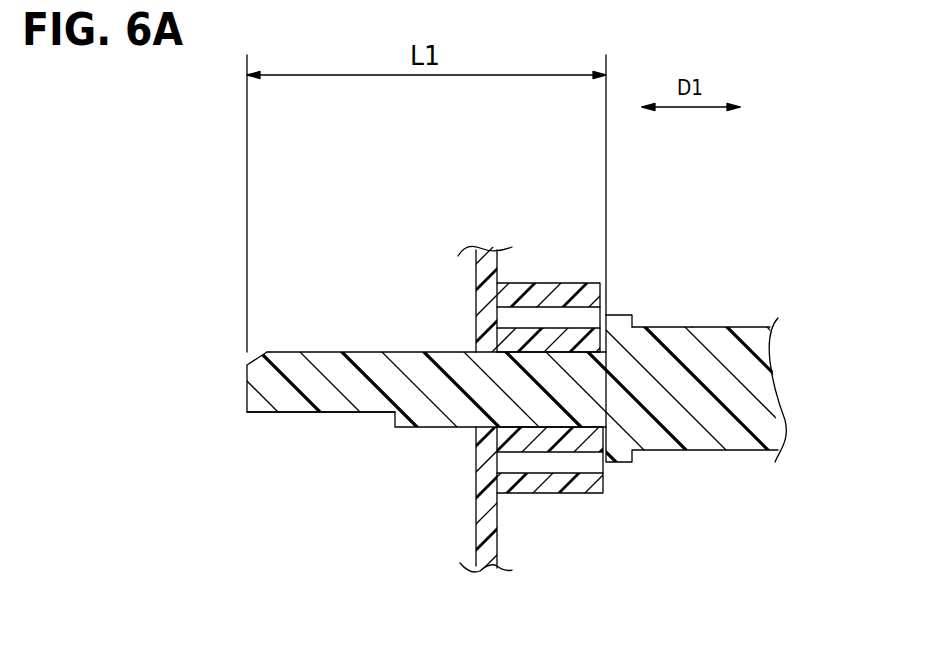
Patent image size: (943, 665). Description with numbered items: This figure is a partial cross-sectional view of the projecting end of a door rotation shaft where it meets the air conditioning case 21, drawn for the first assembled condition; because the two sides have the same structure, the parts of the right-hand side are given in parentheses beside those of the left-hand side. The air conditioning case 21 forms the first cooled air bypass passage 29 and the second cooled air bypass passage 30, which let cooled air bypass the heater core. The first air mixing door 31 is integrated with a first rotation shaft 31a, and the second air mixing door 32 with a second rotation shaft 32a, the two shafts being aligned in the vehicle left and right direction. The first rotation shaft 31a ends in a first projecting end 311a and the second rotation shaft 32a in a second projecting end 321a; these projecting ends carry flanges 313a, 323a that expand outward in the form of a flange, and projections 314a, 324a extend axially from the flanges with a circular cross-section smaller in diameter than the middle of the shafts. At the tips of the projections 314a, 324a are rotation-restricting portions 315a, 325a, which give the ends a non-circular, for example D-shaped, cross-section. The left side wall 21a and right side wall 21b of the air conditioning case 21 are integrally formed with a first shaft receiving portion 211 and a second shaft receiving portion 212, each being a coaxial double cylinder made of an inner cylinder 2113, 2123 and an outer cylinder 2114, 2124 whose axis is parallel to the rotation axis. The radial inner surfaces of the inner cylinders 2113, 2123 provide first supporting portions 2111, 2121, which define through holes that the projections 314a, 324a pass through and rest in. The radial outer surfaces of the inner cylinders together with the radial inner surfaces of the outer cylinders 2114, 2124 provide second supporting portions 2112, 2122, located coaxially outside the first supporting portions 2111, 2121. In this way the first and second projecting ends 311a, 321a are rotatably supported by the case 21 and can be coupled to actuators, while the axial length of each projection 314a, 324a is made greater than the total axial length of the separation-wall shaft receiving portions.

The air conditioning case 21 is at (466, 497).
The left side wall 21a is at (472, 528).
The right side wall 21b is at (434, 523).
The first shaft receiving portion 211 is at (591, 147).
The second shaft receiving portion 212 is at (516, 381).
The first supporting portion 2111 is at (531, 327).
The first supporting portion 2121 is at (506, 240).
The second supporting portion 2112 is at (560, 314).
The second supporting portion 2122 is at (556, 262).
The inner cylinder 2113 is at (530, 433).
The inner cylinder 2123 is at (554, 538).
The outer cylinder 2114 is at (580, 483).
The outer cylinder 2124 is at (556, 526).
The first cooled air bypass passage 29 is at (670, 478).
The second cooled air bypass passage 30 is at (477, 417).
The projection 314a is at (404, 352).
The projection 324a is at (436, 299).
The rotation-restricting portion 315a is at (322, 412).
The rotation-restricting portion 325a is at (336, 450).
The first air mixing door 31 is at (738, 461).
The second air mixing door 32 is at (685, 354).
The first rotation shaft 31a is at (715, 327).
The second rotation shaft 32a is at (756, 286).
The first projecting end 311a is at (662, 327).
The second projecting end 321a is at (722, 268).
The flange 313a is at (620, 315).
The flange 323a is at (691, 250).